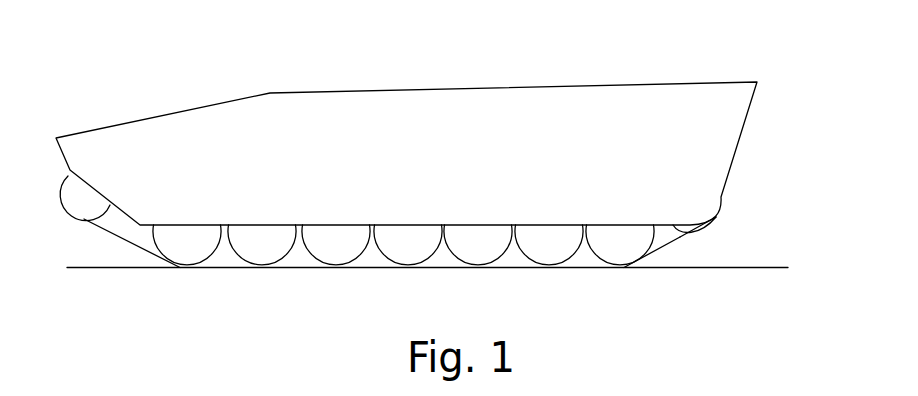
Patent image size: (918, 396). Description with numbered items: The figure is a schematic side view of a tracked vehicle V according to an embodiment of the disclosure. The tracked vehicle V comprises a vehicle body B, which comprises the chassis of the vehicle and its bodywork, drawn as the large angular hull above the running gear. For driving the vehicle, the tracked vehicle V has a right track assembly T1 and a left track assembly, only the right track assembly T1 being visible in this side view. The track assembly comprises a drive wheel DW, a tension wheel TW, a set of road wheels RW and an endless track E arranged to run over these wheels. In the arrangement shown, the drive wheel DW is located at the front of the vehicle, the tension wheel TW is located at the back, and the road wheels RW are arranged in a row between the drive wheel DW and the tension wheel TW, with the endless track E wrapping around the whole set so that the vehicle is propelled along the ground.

The tracked vehicle V is at (320, 58).
The vehicle body B is at (692, 80).
The drive wheel DW is at (105, 222).
The road wheels RW is at (157, 252).
The right track assembly T1 is at (701, 238).
The tension wheel TW is at (676, 233).
The endless track E is at (663, 257).